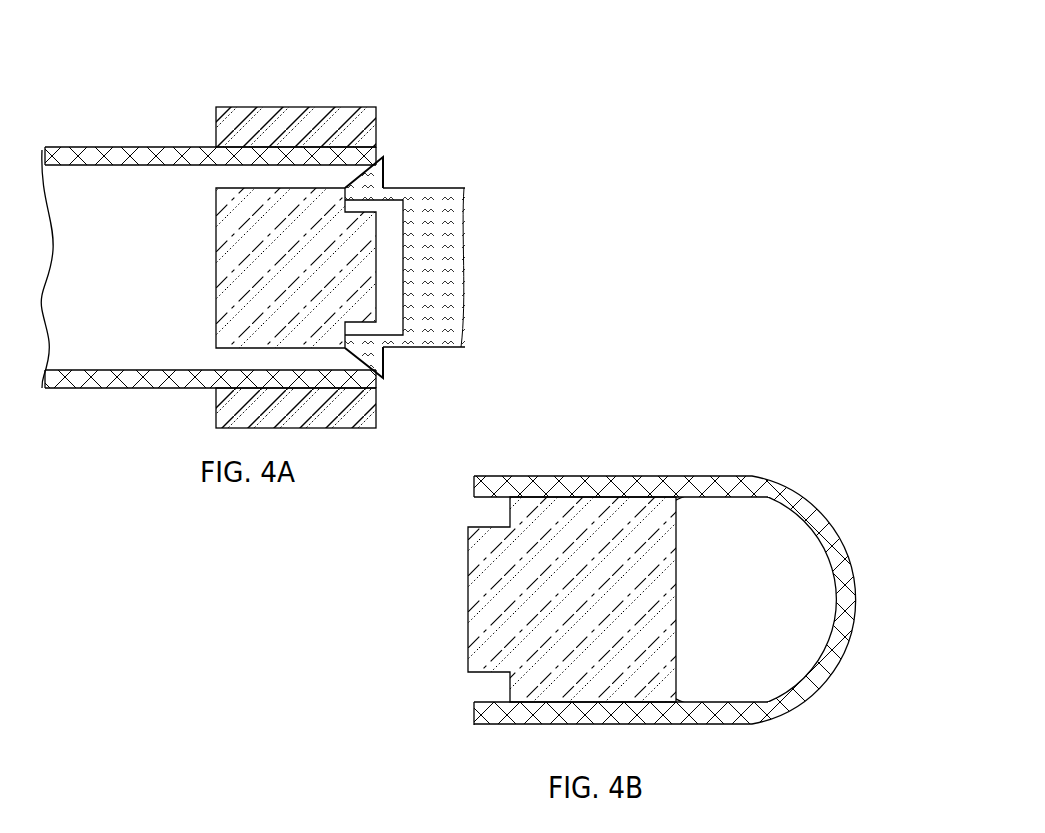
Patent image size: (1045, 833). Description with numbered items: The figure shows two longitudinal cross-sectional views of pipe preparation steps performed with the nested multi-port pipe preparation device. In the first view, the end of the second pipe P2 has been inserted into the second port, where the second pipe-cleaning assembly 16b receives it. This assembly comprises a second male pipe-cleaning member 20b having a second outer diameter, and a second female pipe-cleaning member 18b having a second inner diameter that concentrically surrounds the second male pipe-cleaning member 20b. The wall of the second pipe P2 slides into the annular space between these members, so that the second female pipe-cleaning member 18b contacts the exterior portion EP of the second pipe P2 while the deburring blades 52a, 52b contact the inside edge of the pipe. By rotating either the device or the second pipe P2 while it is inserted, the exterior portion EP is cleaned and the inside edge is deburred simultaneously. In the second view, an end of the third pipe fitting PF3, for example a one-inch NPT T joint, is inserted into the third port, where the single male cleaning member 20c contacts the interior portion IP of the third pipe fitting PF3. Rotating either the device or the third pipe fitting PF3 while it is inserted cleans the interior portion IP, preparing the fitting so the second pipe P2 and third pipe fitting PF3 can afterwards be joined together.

In FIG. 4A, the second pipe-cleaning assembly 16b is at (238, 83).
In FIG. 4A, the second pipe P2 is at (142, 118).
In FIG. 4A, the exterior portion EP is at (100, 147).
In FIG. 4B, the exterior portion EP is at (770, 718).
In FIG. 4A, the interior portion IP is at (148, 167).
In FIG. 4B, the interior portion IP is at (722, 700).
In FIG. 4A, the second female pipe-cleaning member 18b is at (363, 115).
In FIG. 4A, the deburring blade 52a is at (384, 158).
In FIG. 4A, the deburring blade 52b is at (385, 378).
In FIG. 4A, the second male pipe-cleaning member 20b is at (228, 285).
In FIG. 4B, the third pipe fitting PF3 is at (797, 473).
In FIG. 4B, the single male cleaning member 20c is at (665, 583).